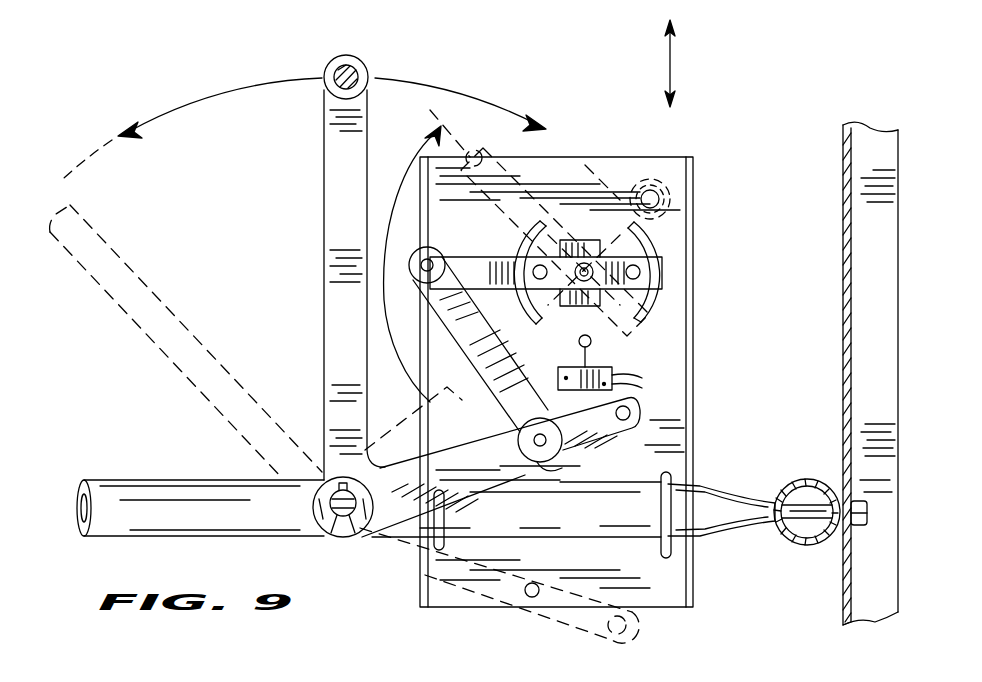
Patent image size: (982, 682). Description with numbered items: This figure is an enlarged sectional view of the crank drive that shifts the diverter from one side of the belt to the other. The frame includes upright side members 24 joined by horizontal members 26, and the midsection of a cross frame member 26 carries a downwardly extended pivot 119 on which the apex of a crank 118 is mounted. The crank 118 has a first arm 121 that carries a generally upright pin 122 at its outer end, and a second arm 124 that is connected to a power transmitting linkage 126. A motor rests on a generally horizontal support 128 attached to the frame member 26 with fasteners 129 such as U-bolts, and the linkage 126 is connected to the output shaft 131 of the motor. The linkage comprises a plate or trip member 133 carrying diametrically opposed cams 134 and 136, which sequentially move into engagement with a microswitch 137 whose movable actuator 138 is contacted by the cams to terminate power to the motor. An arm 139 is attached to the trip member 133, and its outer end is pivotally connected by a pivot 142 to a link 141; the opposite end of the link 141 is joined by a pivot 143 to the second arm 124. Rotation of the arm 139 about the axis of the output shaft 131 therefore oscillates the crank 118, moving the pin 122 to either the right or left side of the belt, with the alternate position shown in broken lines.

The upright side member 24 is at (812, 547).
The horizontal member 26 is at (726, 498).
The crank 118 is at (322, 236).
The pivot 119 is at (352, 538).
The first arm 121 is at (322, 184).
The pin 122 is at (331, 62).
The second arm 124 is at (455, 490).
The power transmitting linkage 126 is at (400, 358).
The support 128 is at (668, 323).
The fasteners 129 is at (668, 478).
The output shaft 131 is at (590, 262).
The trip member 133 is at (576, 250).
The cam 134 is at (520, 246).
The cam 136 is at (646, 237).
The microswitch 137 is at (558, 378).
The movable actuator 138 is at (592, 342).
The arm 139 is at (468, 278).
The link 141 is at (466, 340).
The pivot 142 is at (438, 250).
The pivot 143 is at (544, 445).